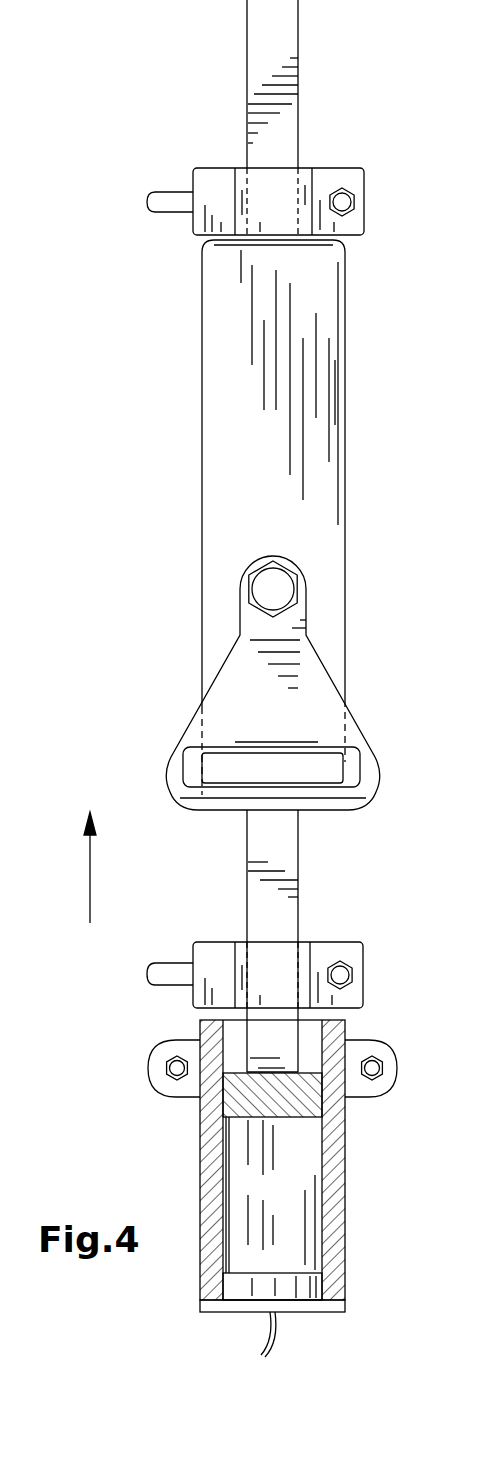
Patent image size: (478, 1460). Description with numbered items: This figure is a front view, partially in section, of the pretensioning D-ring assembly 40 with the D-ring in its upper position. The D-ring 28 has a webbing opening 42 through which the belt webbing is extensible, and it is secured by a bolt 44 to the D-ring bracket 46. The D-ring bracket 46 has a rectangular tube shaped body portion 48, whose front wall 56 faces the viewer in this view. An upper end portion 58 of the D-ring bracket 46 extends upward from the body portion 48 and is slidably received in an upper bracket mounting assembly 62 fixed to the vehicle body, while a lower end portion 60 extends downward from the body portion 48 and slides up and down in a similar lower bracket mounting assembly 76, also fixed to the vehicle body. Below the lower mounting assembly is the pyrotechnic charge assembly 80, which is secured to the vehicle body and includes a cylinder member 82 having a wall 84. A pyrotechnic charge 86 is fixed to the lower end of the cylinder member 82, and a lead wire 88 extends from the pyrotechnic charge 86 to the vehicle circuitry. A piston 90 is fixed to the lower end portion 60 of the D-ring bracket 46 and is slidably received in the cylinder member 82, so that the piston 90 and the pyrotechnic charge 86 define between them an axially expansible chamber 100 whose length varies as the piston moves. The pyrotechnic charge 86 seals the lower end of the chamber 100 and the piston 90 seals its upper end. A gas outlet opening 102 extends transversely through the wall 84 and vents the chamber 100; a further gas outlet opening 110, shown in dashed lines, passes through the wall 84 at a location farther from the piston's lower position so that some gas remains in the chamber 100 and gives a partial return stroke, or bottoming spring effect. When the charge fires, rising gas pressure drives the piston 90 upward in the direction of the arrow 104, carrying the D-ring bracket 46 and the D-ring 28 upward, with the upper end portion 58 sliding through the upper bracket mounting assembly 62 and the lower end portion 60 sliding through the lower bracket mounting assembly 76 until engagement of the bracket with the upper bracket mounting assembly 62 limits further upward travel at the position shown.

The D-ring 28 is at (176, 720).
The pretensioning D-ring assembly 40 is at (394, 250).
The webbing opening 42 is at (198, 777).
The bolt 44 is at (247, 575).
The D-ring bracket 46 is at (352, 375).
The body portion 48 is at (345, 470).
The front wall 56 is at (265, 430).
The upper end portion 58 is at (273, 78).
The lower end portion 60 is at (298, 858).
The upper bracket mounting assembly 62 is at (200, 168).
The lower bracket mounting assembly 76 is at (330, 942).
The pyrotechnic charge assembly 80 is at (155, 1125).
The cylinder member 82 is at (192, 1144).
The wall 84 is at (212, 1210).
The pyrotechnic charge 86 is at (250, 1295).
The lead wire 88 is at (275, 1340).
The piston 90 is at (307, 1088).
The expansible chamber 100 is at (285, 1155).
The gas outlet opening 102 is at (345, 1262).
The arrow 104 is at (91, 910).
The gas outlet opening 110 is at (340, 1220).